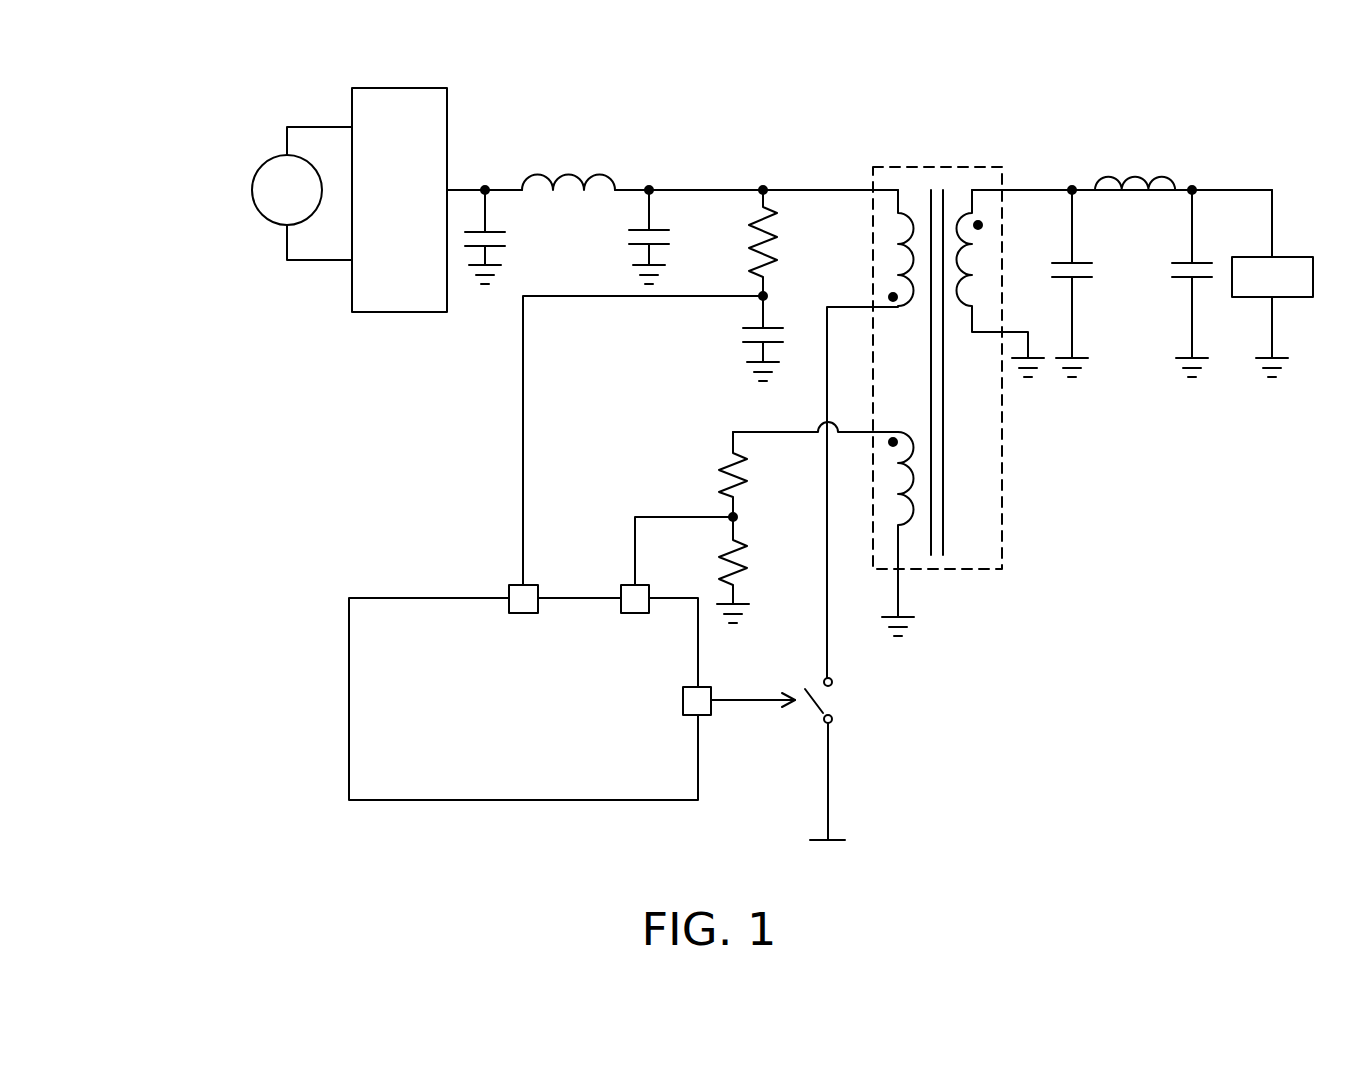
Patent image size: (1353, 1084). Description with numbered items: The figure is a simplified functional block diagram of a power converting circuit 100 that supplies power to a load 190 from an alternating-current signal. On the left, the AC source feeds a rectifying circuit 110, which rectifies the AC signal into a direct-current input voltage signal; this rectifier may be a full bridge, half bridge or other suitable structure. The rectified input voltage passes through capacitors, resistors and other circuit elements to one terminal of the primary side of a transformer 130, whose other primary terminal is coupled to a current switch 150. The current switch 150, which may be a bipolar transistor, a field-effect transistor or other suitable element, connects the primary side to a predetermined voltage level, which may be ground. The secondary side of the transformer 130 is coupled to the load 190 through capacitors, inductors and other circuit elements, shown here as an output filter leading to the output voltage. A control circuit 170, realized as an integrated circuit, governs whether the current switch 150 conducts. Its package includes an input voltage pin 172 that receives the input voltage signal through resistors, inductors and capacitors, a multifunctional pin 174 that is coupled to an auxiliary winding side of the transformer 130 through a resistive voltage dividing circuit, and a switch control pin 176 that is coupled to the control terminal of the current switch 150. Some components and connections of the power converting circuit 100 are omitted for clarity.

The power converting circuit 100 is at (213, 215).
The rectifying circuit 110 is at (352, 290).
The transformer 130 is at (905, 167).
The current switch 150 is at (846, 694).
The control circuit 170 is at (349, 780).
The input voltage pin 172 is at (509, 592).
The multifunctional pin 174 is at (621, 592).
The switch control pin 176 is at (703, 715).
The load 190 is at (1272, 277).